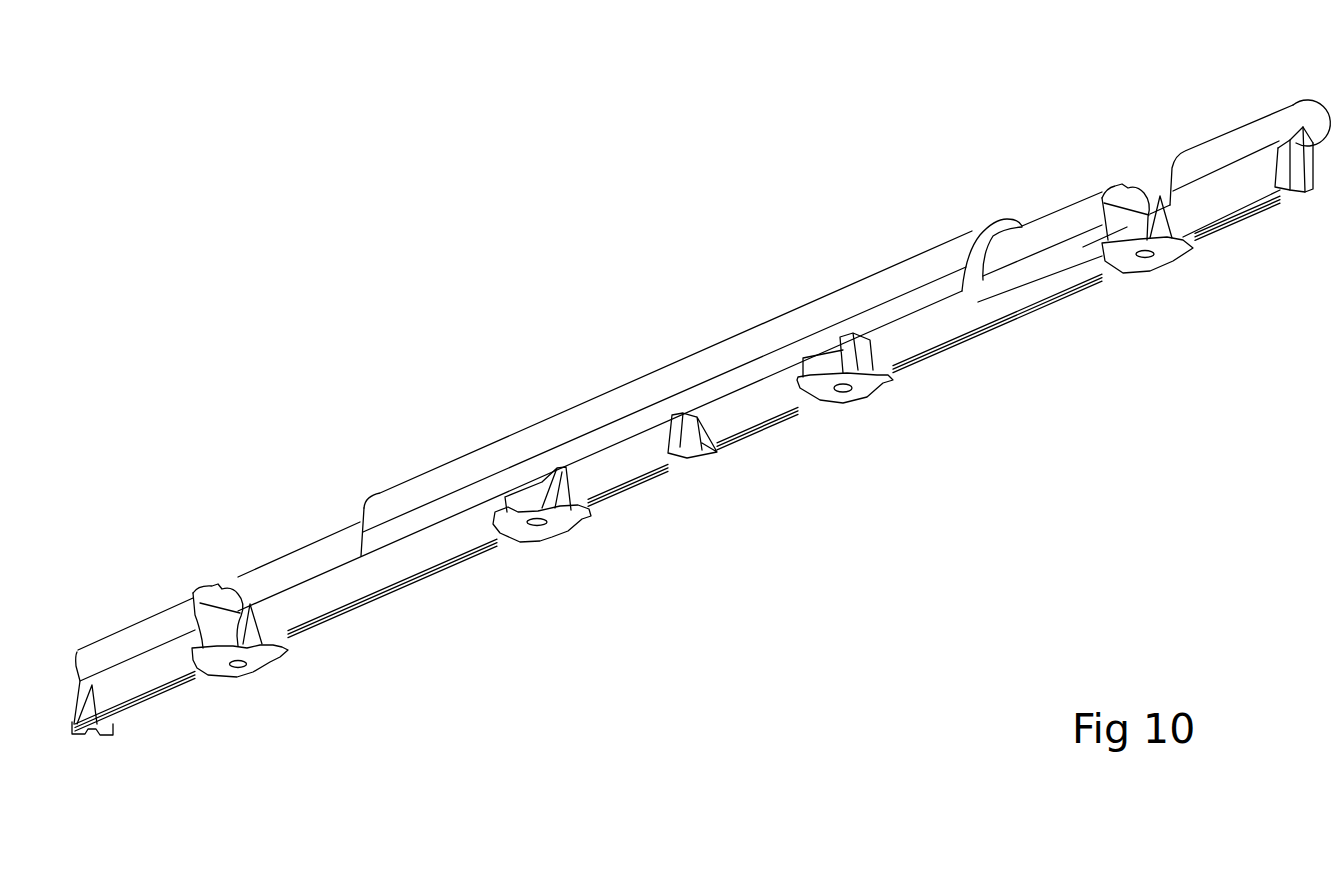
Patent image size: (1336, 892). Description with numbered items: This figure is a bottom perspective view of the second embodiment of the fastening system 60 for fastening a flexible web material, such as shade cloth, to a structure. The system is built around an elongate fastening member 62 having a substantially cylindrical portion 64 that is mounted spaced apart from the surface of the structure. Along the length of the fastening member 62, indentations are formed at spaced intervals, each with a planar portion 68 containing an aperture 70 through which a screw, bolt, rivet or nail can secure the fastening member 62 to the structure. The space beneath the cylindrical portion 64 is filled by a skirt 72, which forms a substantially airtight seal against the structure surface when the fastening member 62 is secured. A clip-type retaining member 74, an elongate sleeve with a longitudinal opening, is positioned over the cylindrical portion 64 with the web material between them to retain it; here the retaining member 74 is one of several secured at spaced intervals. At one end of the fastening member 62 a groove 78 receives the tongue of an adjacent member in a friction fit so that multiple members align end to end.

The fastening system 60 is at (804, 253).
The fastening member 62 is at (155, 598).
The substantially cylindrical portion 64 is at (312, 541).
The planar portion 68 is at (257, 660).
The aperture 70 is at (867, 397).
The skirt 72 is at (727, 426).
The clip-type retaining member 74 is at (642, 371).
The groove 78 is at (1294, 197).